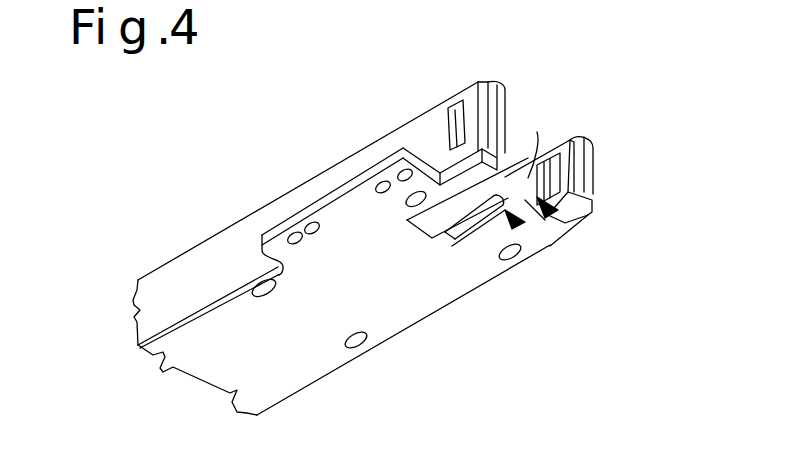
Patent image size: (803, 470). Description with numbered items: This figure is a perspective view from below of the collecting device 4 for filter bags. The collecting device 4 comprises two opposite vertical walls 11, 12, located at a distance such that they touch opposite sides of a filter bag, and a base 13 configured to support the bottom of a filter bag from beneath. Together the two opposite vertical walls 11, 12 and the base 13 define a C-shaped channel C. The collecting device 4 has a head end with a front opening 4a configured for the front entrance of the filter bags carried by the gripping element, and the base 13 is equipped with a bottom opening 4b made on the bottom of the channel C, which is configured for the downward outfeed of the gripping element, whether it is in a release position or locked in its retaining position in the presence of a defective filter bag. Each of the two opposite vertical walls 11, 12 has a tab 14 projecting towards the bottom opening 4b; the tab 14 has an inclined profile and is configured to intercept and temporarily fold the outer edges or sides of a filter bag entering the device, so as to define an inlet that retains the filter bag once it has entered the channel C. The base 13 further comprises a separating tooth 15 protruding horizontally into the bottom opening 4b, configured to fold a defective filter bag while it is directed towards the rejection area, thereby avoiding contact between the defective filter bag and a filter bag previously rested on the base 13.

The collecting device 4 is at (190, 246).
The front opening 4a is at (531, 132).
The bottom opening 4b is at (547, 232).
The vertical wall 11 is at (285, 205).
The vertical wall 12 is at (538, 134).
The base 13 is at (427, 282).
The tab 14 is at (497, 112).
The separating tooth 15 is at (590, 150).
The channel C is at (583, 222).